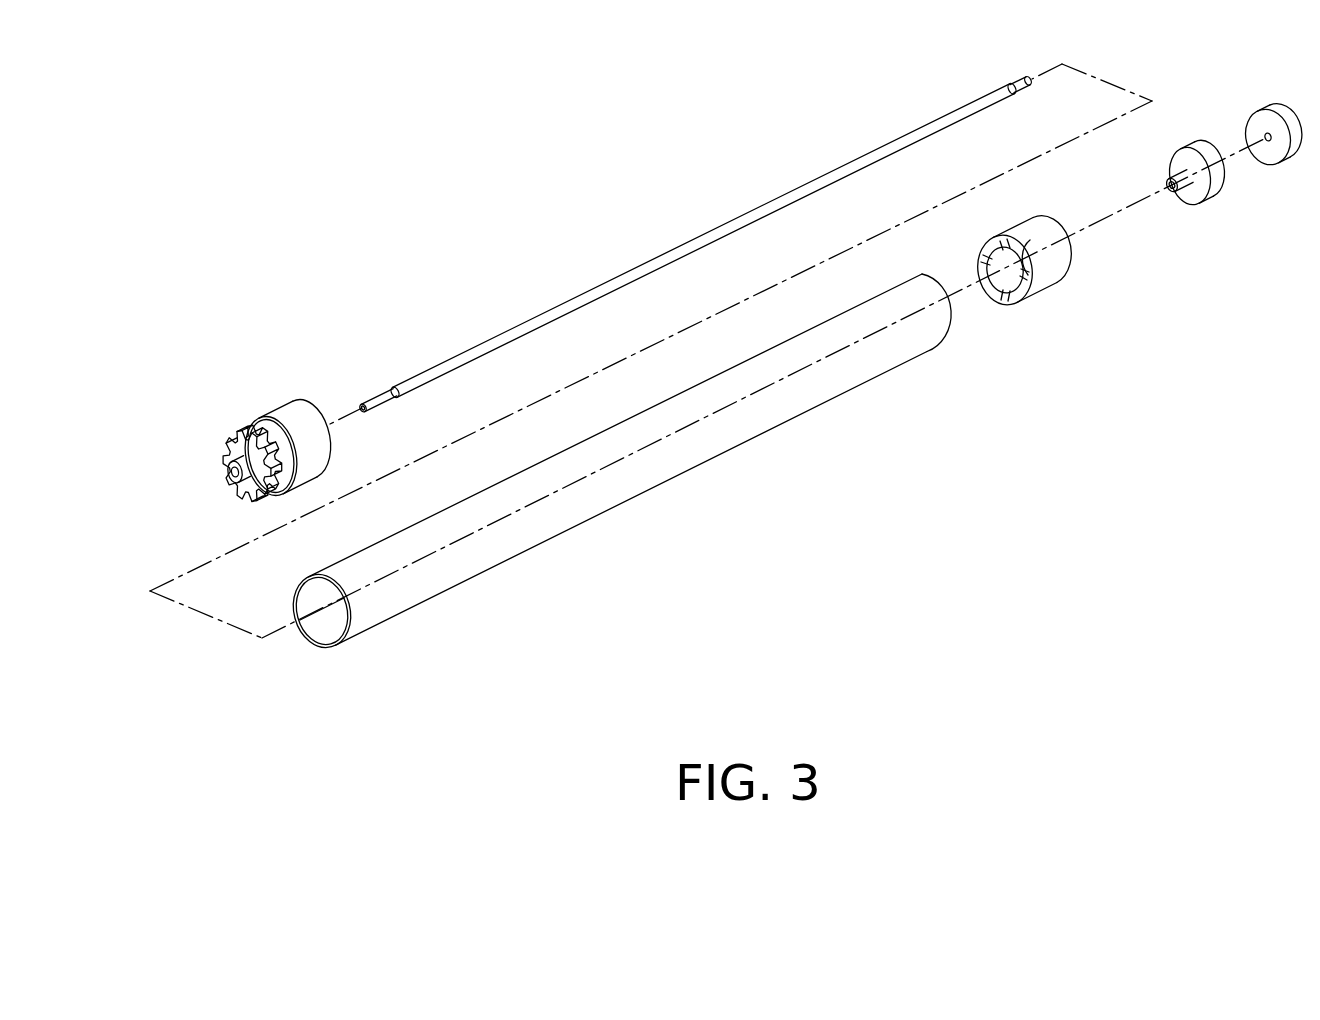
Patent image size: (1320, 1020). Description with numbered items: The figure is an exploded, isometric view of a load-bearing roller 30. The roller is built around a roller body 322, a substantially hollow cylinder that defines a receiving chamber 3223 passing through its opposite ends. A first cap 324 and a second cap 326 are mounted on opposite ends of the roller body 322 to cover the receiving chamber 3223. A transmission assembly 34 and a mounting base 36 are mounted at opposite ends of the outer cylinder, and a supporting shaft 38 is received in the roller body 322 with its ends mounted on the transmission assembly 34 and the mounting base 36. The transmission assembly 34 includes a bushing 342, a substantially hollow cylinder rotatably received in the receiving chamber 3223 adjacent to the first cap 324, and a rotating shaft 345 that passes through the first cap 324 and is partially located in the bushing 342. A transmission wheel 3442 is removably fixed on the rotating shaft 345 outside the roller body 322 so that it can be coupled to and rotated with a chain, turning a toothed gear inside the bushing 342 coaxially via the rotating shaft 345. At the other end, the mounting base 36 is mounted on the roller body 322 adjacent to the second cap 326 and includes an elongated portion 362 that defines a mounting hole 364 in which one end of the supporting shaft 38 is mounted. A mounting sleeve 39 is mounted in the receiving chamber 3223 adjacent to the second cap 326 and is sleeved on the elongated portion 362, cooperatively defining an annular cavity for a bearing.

The load-bearing roller 30 is at (482, 203).
The supporting shaft 38 is at (690, 243).
The roller body 322 is at (473, 532).
The receiving chamber 3223 is at (313, 627).
The mounting sleeve 39 is at (1017, 237).
The mounting base 36 is at (1220, 198).
The elongated portion 362 is at (1187, 183).
The mounting hole 364 is at (1170, 190).
The second cap 326 is at (1278, 118).
The transmission assembly 34 is at (268, 400).
The bushing 342 is at (304, 410).
The first cap 324 is at (255, 420).
The transmission wheel 3442 is at (225, 433).
The rotating shaft 345 is at (228, 481).